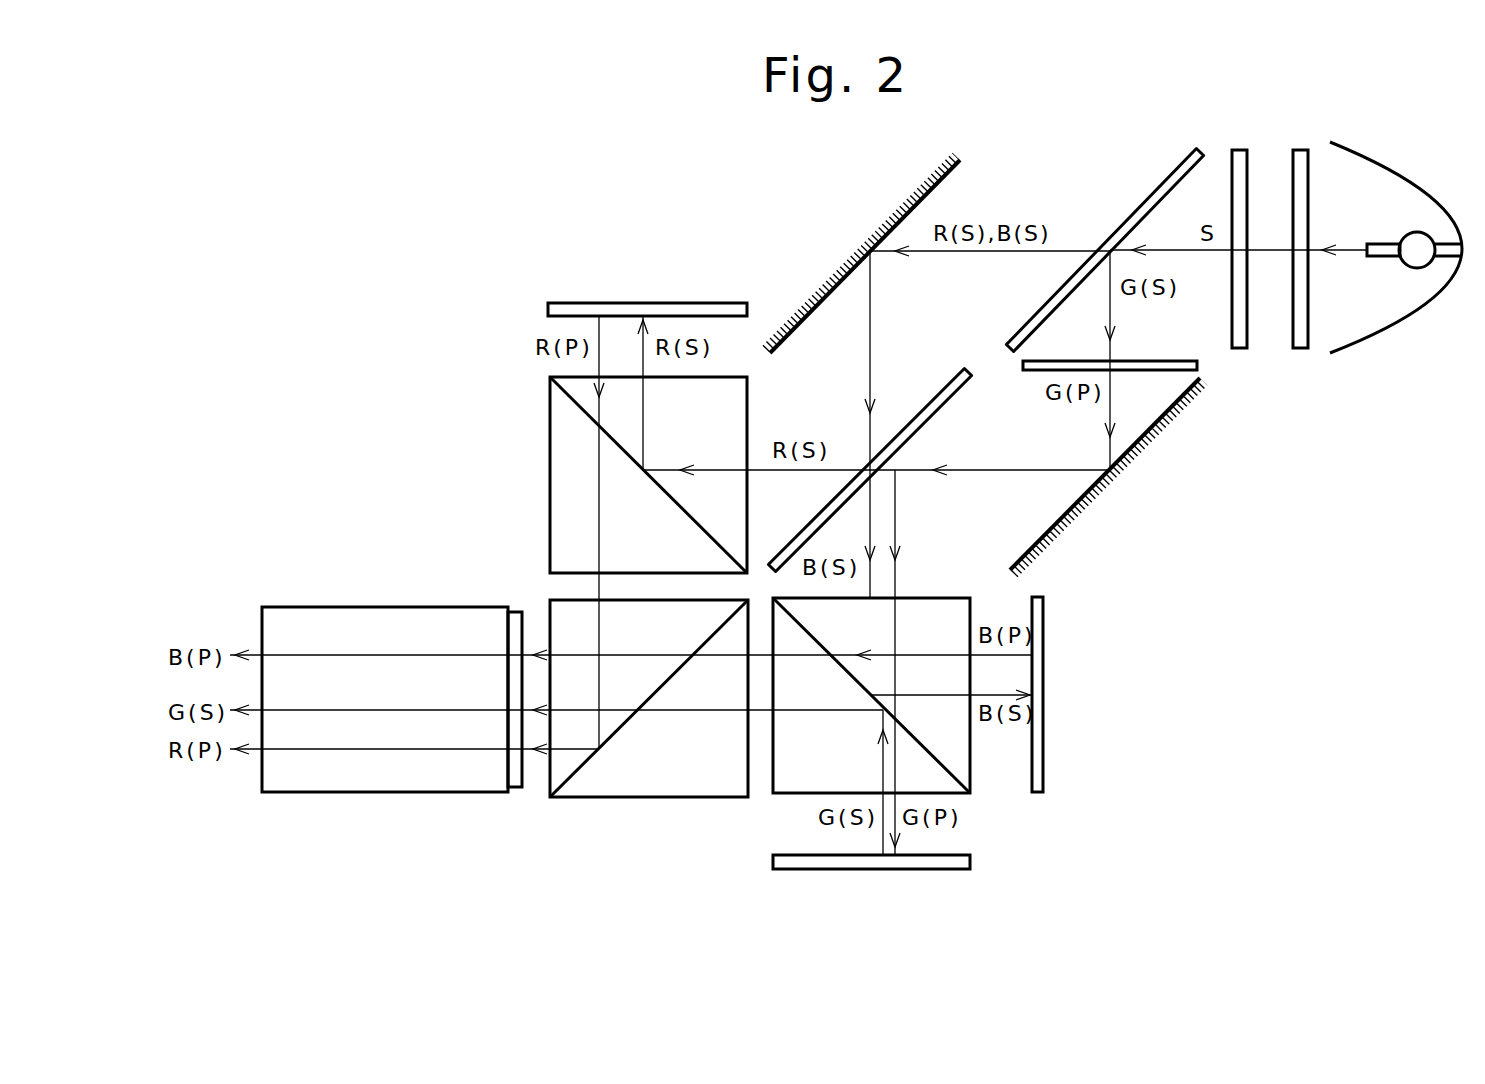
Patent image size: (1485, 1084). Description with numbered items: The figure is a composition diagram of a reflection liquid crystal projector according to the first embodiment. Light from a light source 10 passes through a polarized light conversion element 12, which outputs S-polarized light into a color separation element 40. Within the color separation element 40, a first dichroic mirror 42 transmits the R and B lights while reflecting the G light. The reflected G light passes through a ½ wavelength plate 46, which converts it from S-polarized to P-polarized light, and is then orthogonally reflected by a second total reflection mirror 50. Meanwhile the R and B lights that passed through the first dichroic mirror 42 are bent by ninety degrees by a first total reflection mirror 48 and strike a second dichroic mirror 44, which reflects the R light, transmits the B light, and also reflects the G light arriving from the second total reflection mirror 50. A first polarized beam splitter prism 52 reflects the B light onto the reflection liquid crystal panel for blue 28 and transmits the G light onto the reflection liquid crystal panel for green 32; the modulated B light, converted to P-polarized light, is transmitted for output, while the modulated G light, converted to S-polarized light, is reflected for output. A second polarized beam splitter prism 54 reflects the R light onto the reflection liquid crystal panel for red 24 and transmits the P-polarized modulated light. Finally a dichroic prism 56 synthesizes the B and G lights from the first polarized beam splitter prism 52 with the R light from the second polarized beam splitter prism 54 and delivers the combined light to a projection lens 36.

The light source 10 is at (1358, 150).
The polarized light conversion element 12 is at (1317, 135).
The reflection liquid crystal panel for red 24 is at (660, 308).
The reflection liquid crystal panel for blue 28 is at (1037, 628).
The reflection liquid crystal panel for green 32 is at (957, 862).
The projection lens 36 is at (377, 622).
The color separation element 40 is at (1170, 517).
The first dichroic mirror 42 is at (1173, 177).
The second dichroic mirror 44 is at (923, 420).
The ½ wavelength plate 46 is at (1150, 361).
The first total reflection mirror 48 is at (918, 191).
The second total reflection mirror 50 is at (1153, 421).
The first polarized beam splitter prism 52 is at (948, 597).
The second polarized beam splitter prism 54 is at (570, 440).
The dichroic prism 56 is at (655, 785).